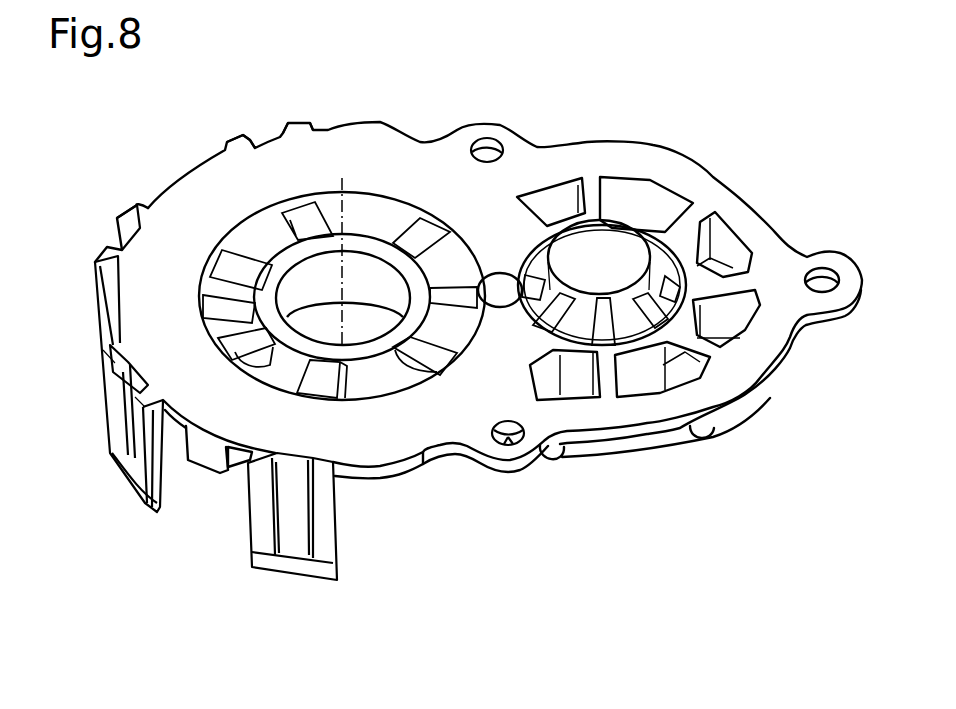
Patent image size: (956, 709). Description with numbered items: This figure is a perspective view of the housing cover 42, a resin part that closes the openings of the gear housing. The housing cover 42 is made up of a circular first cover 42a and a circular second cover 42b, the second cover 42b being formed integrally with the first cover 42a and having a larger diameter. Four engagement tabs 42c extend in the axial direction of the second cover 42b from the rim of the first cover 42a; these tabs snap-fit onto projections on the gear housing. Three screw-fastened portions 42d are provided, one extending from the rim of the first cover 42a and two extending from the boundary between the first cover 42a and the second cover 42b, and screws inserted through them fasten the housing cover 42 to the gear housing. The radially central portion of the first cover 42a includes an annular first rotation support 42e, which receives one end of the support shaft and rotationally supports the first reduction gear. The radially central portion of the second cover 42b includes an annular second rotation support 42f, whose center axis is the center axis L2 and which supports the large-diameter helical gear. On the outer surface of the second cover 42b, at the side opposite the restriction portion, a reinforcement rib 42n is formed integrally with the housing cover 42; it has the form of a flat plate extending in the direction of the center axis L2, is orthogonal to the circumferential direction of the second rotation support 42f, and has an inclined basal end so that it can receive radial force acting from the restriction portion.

The housing cover 42 is at (688, 152).
The first cover 42a is at (614, 152).
The second cover 42b is at (403, 160).
The engagement tab 42c is at (300, 127).
The screw-fastened portion 42d is at (487, 133).
The first rotation support 42e is at (624, 313).
The second rotation support 42f is at (280, 262).
The reinforcement rib 42n is at (455, 290).
The center axis L2 is at (340, 180).